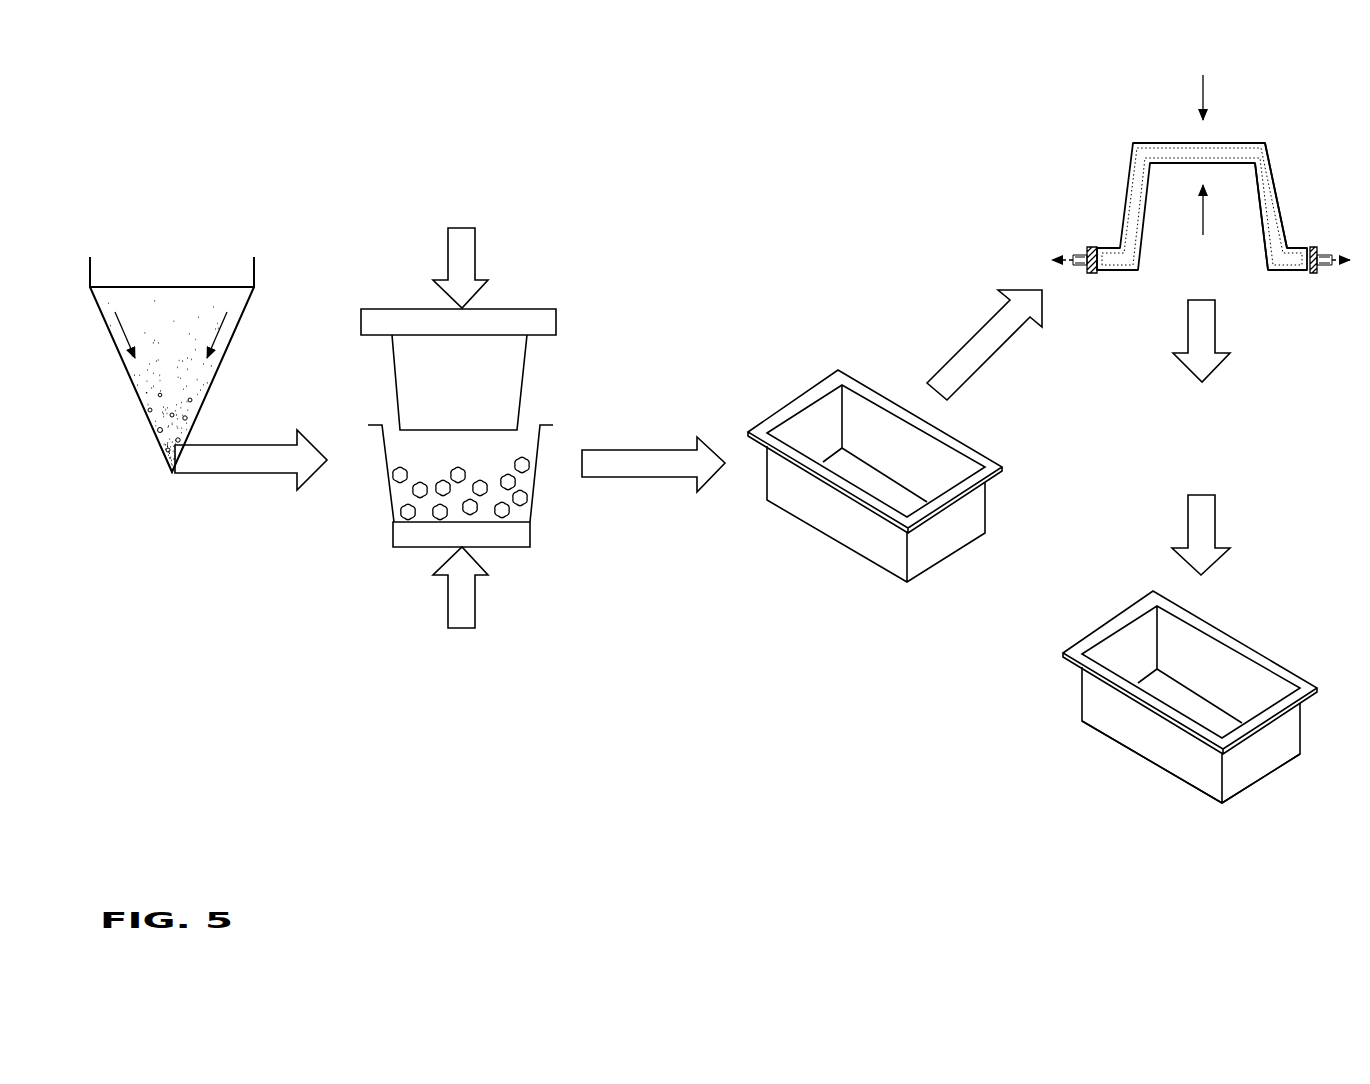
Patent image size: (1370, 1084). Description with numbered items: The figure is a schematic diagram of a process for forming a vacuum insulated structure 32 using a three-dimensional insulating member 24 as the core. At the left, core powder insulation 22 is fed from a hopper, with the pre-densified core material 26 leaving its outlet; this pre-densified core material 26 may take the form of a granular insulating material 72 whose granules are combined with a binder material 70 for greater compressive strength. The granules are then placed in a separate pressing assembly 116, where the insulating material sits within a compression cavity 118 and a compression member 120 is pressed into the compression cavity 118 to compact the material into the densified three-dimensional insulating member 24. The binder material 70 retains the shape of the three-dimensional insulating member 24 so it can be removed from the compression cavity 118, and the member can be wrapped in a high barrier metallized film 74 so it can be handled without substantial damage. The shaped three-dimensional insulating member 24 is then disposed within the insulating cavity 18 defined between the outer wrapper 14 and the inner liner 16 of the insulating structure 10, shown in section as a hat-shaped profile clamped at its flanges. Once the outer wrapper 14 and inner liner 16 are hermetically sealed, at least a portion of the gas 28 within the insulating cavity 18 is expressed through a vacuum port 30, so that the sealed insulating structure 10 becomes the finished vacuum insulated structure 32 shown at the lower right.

The insulating structure 10 is at (1161, 706).
The outer wrapper 14 is at (1051, 454).
The inner liner 16 is at (1130, 272).
The insulating cavity 18 is at (1272, 185).
The core powder insulation 22 is at (175, 302).
The three-dimensional insulating member 24 is at (1162, 152).
The pre-densified core material 26 is at (155, 439).
The gas 28 is at (1347, 265).
The vacuum port 30 is at (1327, 268).
The vacuum insulated structure 32 is at (1190, 789).
The binder material 70 is at (875, 463).
The granular insulating material 72 is at (410, 490).
The high barrier metallized film 74 is at (870, 423).
The pressing assembly 116 is at (482, 428).
The compression cavity 118 is at (533, 493).
The compression member 120 is at (527, 363).